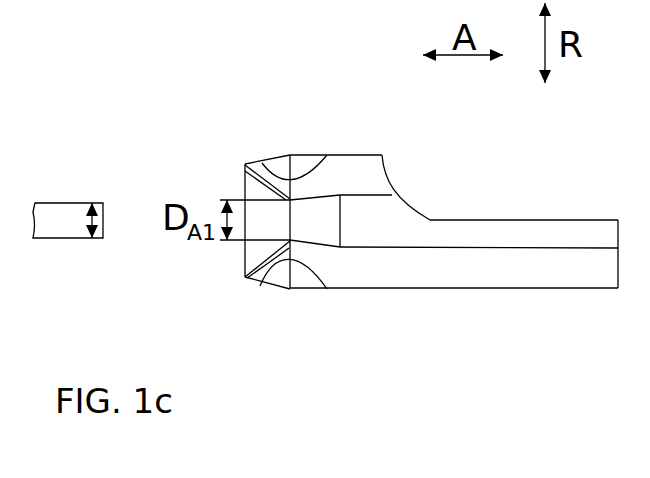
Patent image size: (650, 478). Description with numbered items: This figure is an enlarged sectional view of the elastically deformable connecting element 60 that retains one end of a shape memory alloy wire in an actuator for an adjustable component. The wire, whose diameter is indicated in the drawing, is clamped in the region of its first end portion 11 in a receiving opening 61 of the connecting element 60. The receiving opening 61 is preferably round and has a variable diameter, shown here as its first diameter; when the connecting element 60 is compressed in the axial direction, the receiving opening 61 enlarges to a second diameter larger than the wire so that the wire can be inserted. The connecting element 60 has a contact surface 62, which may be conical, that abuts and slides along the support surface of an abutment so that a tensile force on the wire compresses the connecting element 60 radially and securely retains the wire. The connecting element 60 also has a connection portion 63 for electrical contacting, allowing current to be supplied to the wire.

The first end portion 11 is at (103, 203).
The connecting element 60 is at (414, 216).
The receiving opening 61 is at (247, 277).
The contact surface 62 is at (272, 158).
The connection portion 63 is at (590, 267).